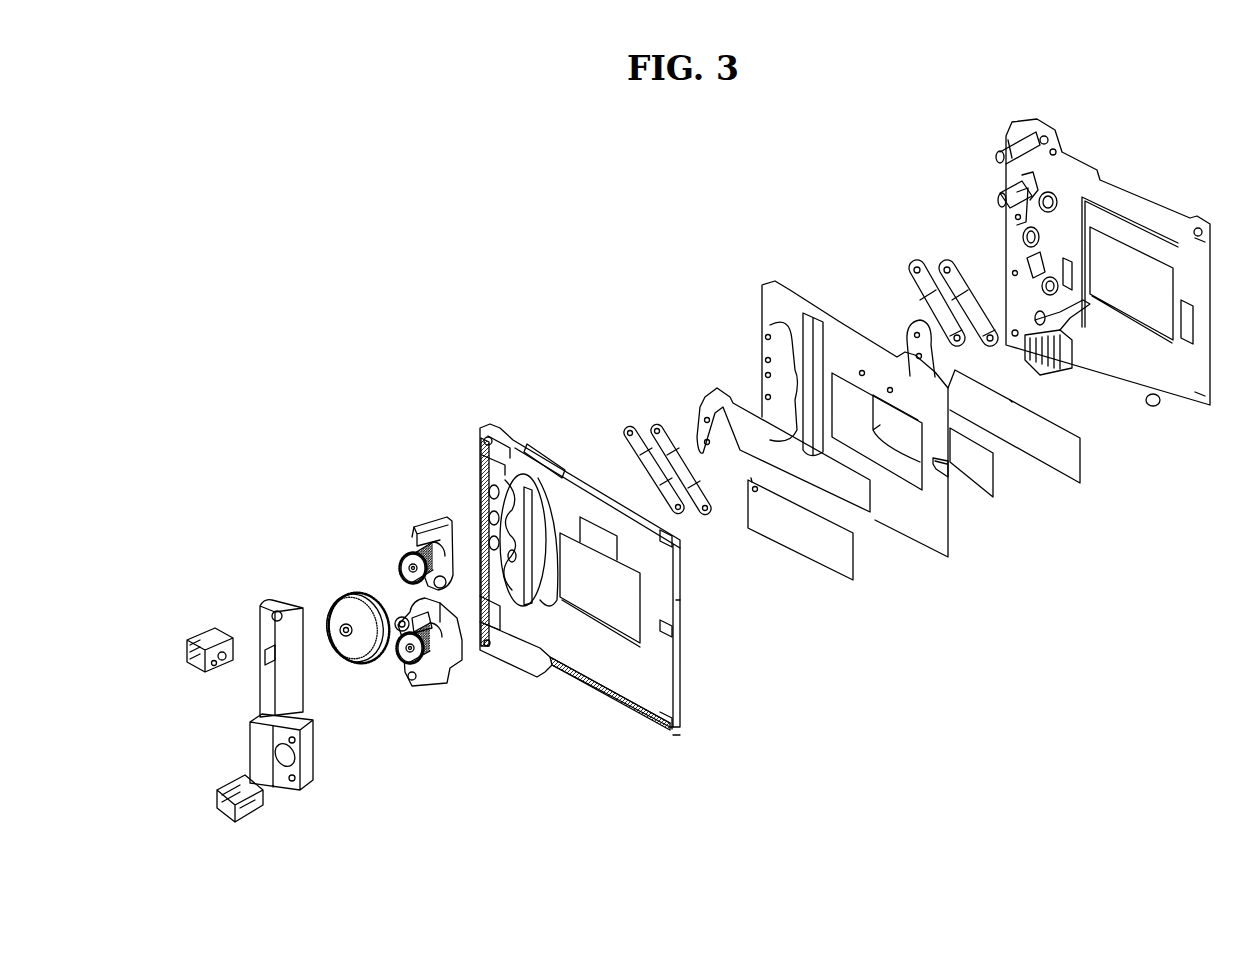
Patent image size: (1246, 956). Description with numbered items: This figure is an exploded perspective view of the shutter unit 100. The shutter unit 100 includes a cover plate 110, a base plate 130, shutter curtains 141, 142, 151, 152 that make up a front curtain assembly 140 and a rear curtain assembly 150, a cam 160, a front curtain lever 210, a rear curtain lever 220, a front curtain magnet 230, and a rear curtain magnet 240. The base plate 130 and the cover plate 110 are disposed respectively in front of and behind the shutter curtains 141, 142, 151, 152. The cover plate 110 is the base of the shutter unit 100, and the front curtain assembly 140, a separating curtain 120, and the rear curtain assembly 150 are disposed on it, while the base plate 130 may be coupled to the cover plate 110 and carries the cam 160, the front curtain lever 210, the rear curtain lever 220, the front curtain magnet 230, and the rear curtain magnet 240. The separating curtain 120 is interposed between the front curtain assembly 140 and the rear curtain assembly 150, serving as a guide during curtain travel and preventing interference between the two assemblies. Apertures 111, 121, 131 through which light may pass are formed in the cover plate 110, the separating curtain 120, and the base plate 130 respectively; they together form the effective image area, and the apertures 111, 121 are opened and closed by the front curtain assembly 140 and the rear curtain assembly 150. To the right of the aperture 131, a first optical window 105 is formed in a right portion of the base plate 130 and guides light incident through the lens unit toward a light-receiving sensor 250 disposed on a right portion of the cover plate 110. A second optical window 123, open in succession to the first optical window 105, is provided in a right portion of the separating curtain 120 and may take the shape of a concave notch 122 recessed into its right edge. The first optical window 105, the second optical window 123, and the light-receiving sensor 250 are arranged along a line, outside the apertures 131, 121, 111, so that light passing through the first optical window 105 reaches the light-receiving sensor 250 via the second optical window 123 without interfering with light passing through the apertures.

The shutter unit 100 is at (553, 281).
The first optical window 105 is at (678, 637).
The cover plate 110 is at (1168, 235).
The aperture 111 is at (1130, 285).
The separating curtain 120 is at (767, 281).
The aperture 121 is at (895, 457).
The concave notch 122 is at (946, 470).
The second optical window 123 is at (941, 462).
The base plate 130 is at (640, 677).
The aperture 131 is at (603, 597).
The front curtain assembly 140 is at (1065, 485).
The shutter curtain 141 is at (1043, 447).
The shutter curtain 142 is at (985, 480).
The rear curtain assembly 150 is at (709, 376).
The shutter curtain 151 is at (802, 533).
The shutter curtain 152 is at (850, 502).
The cam 160 is at (329, 584).
The front curtain lever 210 is at (431, 690).
The rear curtain lever 220 is at (404, 524).
The front curtain magnet 230 is at (209, 774).
The rear curtain magnet 240 is at (180, 622).
The light-receiving sensor 250 is at (1190, 343).